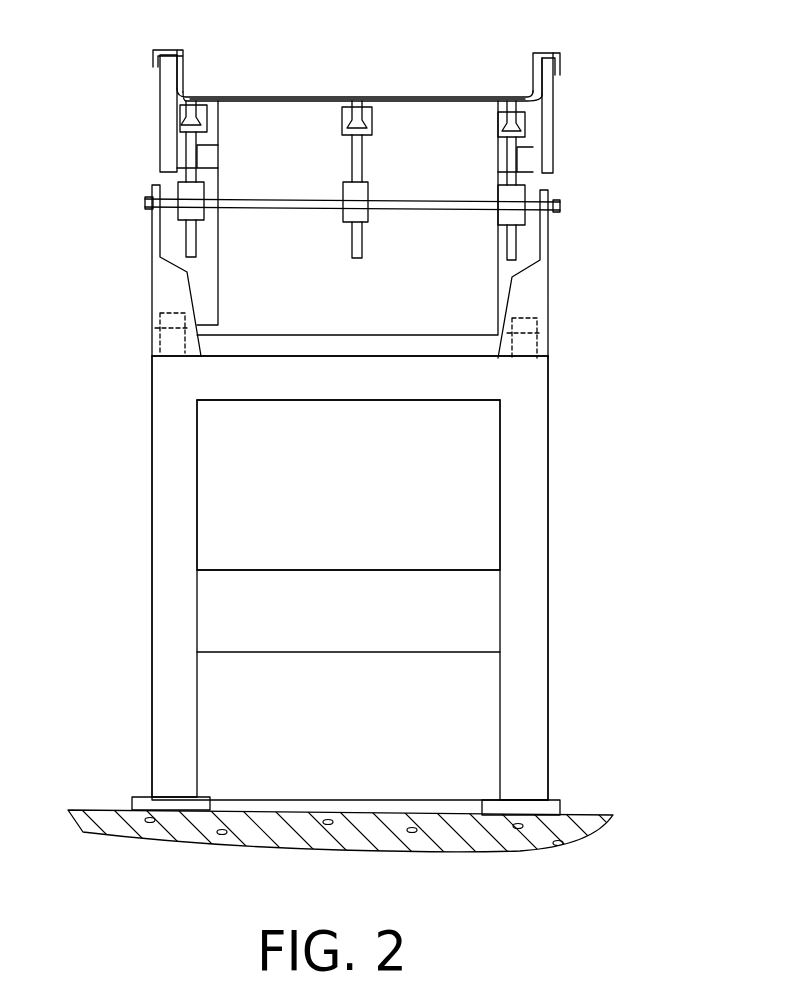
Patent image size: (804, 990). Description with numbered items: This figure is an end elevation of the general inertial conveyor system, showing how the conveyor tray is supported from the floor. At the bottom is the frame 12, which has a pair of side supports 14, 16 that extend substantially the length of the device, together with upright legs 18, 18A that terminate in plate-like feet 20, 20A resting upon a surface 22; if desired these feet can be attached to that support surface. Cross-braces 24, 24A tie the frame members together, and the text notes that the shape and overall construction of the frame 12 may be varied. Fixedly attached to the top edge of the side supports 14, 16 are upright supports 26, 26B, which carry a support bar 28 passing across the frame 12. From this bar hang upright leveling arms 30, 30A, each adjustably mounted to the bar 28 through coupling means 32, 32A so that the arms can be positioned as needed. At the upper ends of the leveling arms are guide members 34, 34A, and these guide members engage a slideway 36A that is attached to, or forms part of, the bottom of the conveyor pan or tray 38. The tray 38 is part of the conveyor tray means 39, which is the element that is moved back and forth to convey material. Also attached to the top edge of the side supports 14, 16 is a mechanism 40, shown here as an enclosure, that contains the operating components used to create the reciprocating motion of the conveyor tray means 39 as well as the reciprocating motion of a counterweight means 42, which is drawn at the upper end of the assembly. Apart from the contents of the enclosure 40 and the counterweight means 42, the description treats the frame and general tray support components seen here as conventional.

The frame 12 is at (150, 506).
The side support 14 is at (152, 362).
The side support 16 is at (548, 428).
The upright leg 18 is at (152, 610).
The upright leg 18A is at (548, 530).
The plate-like foot 20 is at (135, 797).
The plate-like foot 20A is at (560, 800).
The surface 22 is at (325, 810).
The cross-brace 24 is at (292, 400).
The cross-brace 24A is at (335, 570).
The upright support 26 is at (152, 268).
The upright support 26B is at (550, 277).
The support bar 28 is at (292, 210).
The upright leveling arm 30 is at (180, 157).
The upright leveling arm 30A is at (365, 158).
The coupling means 32 is at (206, 192).
The coupling means 32A is at (362, 240).
The guide member 34 is at (180, 125).
The guide member 34A is at (375, 115).
The slideway 36A is at (340, 104).
The conveyor pan or tray 38 is at (352, 98).
The conveyor tray means 39 is at (187, 56).
The mechanism 40 is at (335, 307).
The counterweight means 42 is at (157, 104).